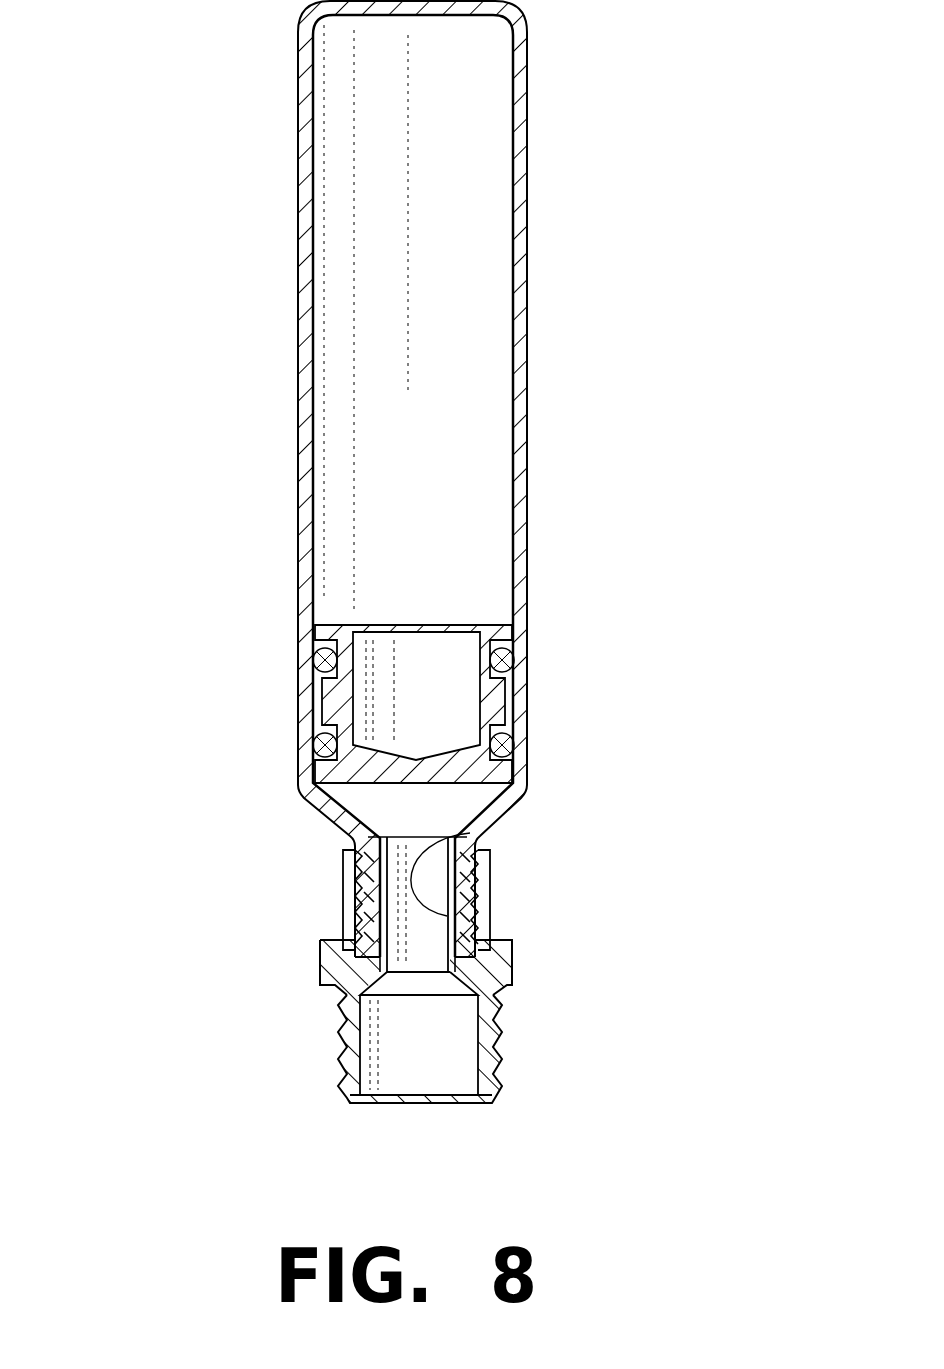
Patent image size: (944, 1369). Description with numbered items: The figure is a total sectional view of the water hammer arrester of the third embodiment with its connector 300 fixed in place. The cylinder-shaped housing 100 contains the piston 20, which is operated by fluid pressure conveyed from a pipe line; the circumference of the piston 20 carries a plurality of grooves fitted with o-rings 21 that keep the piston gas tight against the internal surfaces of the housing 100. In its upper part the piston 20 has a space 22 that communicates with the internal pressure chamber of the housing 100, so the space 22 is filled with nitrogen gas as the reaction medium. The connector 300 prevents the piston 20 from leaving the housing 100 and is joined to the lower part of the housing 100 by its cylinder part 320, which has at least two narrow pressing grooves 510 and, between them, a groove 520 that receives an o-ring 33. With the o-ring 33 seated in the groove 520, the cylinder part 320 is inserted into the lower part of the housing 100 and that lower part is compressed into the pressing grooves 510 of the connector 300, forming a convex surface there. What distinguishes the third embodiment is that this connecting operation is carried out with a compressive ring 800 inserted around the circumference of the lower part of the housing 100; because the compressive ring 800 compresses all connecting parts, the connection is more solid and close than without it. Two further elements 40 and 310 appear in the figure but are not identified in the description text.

The housing 100 is at (298, 348).
The inner chamber 40 is at (465, 324).
The piston 20 is at (335, 696).
The space 22 is at (442, 658).
The o-rings 21 is at (512, 742).
The cylinder part 320 is at (323, 786).
The compressive ring 800 is at (343, 870).
The o-ring 33 is at (347, 892).
The groove 520 is at (470, 833).
The pressing grooves 510 is at (447, 916).
The connector 300 is at (500, 985).
The threaded connector 310 is at (338, 1052).